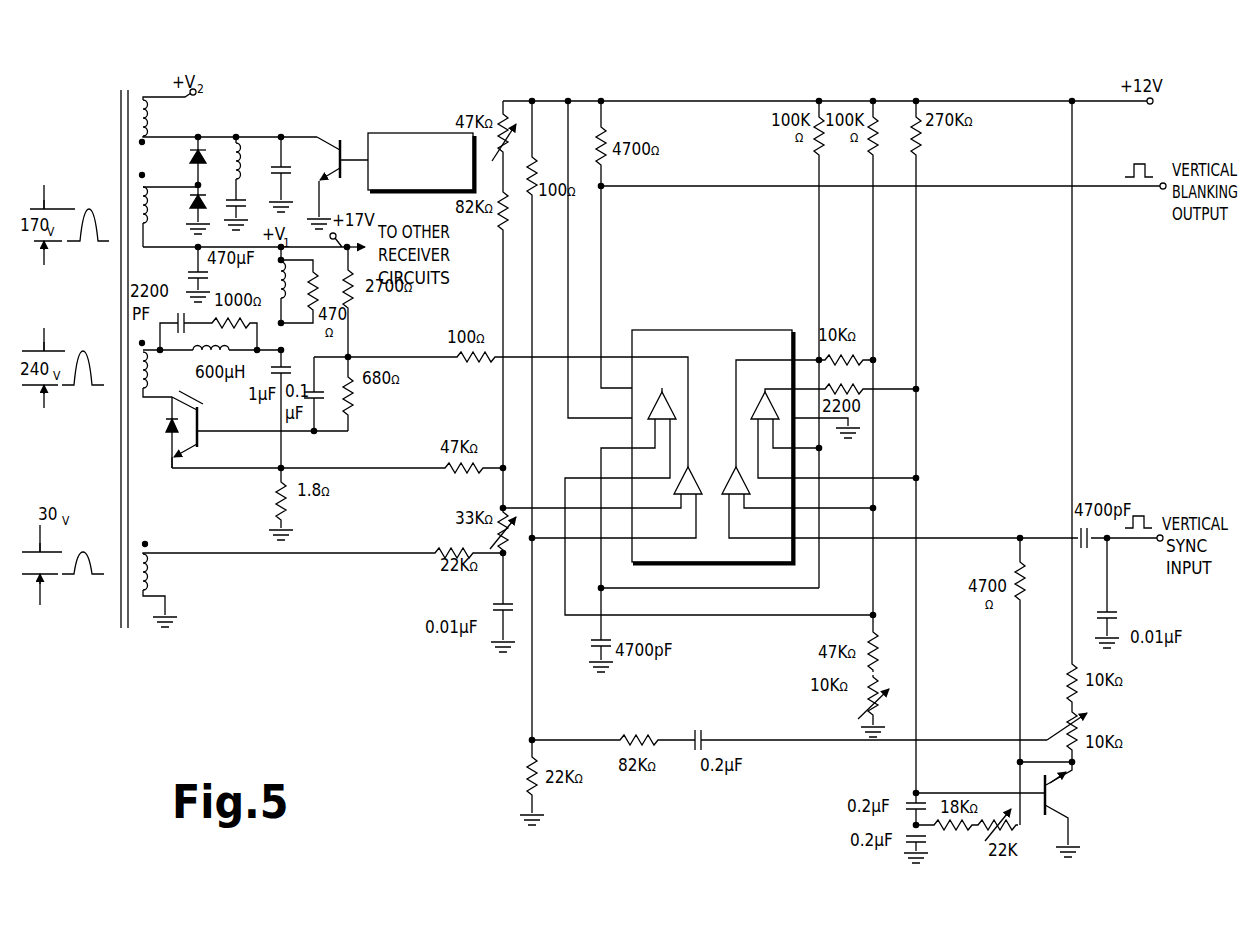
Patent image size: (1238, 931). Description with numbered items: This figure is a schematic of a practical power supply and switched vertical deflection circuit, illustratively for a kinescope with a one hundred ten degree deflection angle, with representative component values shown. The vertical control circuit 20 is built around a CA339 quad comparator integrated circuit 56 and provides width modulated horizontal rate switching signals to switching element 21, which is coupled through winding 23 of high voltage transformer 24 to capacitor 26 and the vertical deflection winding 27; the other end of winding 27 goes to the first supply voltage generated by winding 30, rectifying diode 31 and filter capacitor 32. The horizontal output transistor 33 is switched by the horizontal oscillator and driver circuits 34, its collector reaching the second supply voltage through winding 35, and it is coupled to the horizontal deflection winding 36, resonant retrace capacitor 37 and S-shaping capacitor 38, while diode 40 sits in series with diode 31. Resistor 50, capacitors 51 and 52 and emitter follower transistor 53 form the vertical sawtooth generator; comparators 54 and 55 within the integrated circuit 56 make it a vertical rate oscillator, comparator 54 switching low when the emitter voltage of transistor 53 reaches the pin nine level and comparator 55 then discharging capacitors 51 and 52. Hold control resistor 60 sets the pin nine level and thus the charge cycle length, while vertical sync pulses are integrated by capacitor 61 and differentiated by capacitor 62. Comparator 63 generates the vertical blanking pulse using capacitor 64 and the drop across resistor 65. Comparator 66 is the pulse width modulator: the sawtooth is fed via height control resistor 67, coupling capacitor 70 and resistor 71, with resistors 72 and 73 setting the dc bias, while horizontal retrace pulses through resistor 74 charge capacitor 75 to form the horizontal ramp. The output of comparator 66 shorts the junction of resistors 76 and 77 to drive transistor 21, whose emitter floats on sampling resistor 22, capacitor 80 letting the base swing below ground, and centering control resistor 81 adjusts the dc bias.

The vertical control circuit 20 is at (714, 477).
The switching element 21 is at (162, 442).
The sampling resistor 22 is at (285, 518).
The winding 23 is at (146, 375).
The high voltage transformer 24 is at (115, 276).
The capacitor 26 is at (297, 374).
The vertical deflection winding 27 is at (286, 290).
The winding 30 is at (146, 220).
The rectifying diode 31 is at (190, 202).
The filter capacitor 32 is at (185, 274).
The horizontal output transistor 33 is at (352, 141).
The horizontal oscillator and driver circuits 34 is at (445, 134).
The winding 35 is at (159, 118).
The horizontal deflection winding 36 is at (250, 160).
The resonant retrace capacitor 37 is at (291, 163).
The S-shaping capacitor 38 is at (249, 206).
The diode 40 is at (189, 156).
The resistor 50 is at (921, 155).
The capacitor 51 is at (909, 790).
The capacitor 52 is at (926, 845).
The emitter follower transistor 53 is at (1064, 812).
The comparator 54 is at (735, 467).
The comparator 55 is at (765, 392).
The integrated circuit 56 is at (726, 330).
The hold control resistor 60 is at (878, 707).
The capacitor 61 is at (1118, 618).
The capacitor 62 is at (1088, 550).
The comparator 63 is at (672, 384).
The capacitor 64 is at (590, 649).
The resistor 65 is at (874, 364).
The comparator 66 is at (688, 467).
The height control resistor 67 is at (1062, 724).
The coupling capacitor 70 is at (702, 736).
The resistor 71 is at (639, 727).
The resistor 72 is at (524, 777).
The resistor 73 is at (543, 167).
The resistor 74 is at (449, 553).
The capacitor 75 is at (511, 607).
The resistor 76 is at (360, 302).
The resistor 77 is at (353, 406).
The capacitor 80 is at (331, 395).
The centering control resistor 81 is at (498, 112).